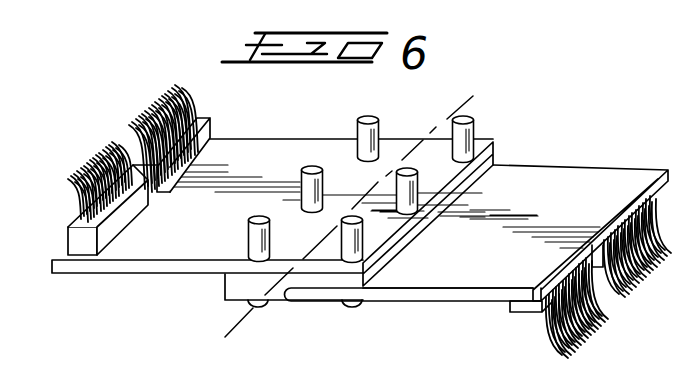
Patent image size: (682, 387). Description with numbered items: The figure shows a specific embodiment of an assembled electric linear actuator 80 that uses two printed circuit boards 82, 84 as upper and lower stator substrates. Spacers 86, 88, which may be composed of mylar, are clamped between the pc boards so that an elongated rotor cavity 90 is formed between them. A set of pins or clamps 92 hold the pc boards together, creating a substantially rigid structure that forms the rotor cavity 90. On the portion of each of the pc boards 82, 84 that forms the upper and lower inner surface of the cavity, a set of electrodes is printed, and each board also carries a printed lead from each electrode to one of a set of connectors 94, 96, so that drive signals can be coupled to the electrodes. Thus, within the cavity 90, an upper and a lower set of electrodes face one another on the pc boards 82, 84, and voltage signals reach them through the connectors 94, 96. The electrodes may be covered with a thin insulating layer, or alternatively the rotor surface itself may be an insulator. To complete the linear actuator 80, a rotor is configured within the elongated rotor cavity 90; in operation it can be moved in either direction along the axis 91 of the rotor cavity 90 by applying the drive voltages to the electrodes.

The electric linear actuator 80 is at (515, 157).
The printed circuit board 82 is at (259, 138).
The printed circuit board 84 is at (425, 302).
The spacer 86 is at (225, 280).
The spacer 88 is at (372, 302).
The rotor cavity 90 is at (294, 290).
The axis 91 is at (473, 96).
The pins or clamps 92 is at (352, 126).
The connector 94 is at (68, 233).
The connector 96 is at (515, 314).